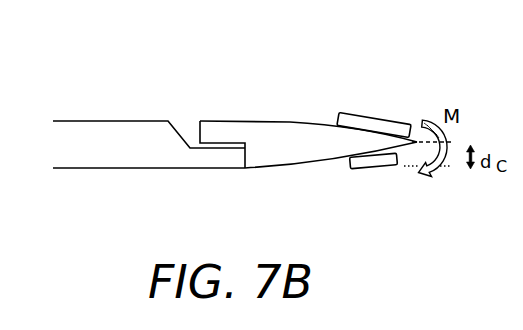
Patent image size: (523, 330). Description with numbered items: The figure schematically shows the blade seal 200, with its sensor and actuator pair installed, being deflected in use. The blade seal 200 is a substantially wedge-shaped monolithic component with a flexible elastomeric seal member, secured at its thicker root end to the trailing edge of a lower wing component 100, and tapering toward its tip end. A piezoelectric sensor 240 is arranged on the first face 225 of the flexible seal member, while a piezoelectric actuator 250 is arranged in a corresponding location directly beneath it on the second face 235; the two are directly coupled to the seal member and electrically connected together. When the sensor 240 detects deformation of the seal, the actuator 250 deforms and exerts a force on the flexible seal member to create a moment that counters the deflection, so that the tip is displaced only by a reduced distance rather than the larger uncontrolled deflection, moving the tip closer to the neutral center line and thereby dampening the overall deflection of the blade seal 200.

The instrument shaft 100 is at (115, 142).
The blade seal 200 is at (288, 125).
The first face 225 is at (286, 121).
The second face 235 is at (307, 165).
The sensor 240 is at (380, 168).
The actuator 250 is at (375, 132).